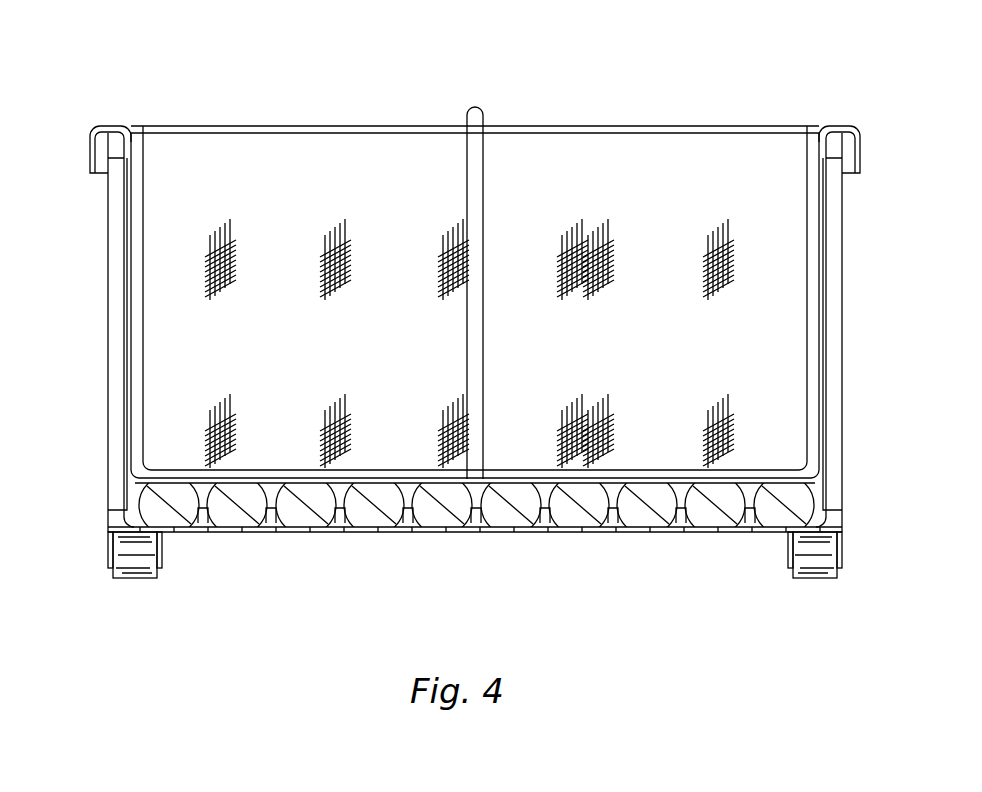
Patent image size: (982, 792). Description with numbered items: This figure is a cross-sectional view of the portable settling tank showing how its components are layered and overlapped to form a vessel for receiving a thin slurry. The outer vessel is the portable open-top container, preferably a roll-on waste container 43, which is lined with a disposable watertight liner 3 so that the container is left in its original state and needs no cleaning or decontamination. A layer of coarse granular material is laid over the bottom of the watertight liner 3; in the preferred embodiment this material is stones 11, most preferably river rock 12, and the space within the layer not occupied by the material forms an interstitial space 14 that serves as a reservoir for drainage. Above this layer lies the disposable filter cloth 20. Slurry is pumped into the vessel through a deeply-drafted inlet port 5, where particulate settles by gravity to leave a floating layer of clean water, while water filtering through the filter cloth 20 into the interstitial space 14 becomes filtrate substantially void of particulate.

The watertight liner 3 is at (125, 336).
The roll-on waste container 43 is at (113, 150).
The filter cloth 20 is at (592, 183).
The inlet port 5 is at (473, 117).
The stones 11 is at (518, 523).
The river rock 12 is at (640, 518).
The interstitial space 14 is at (263, 517).